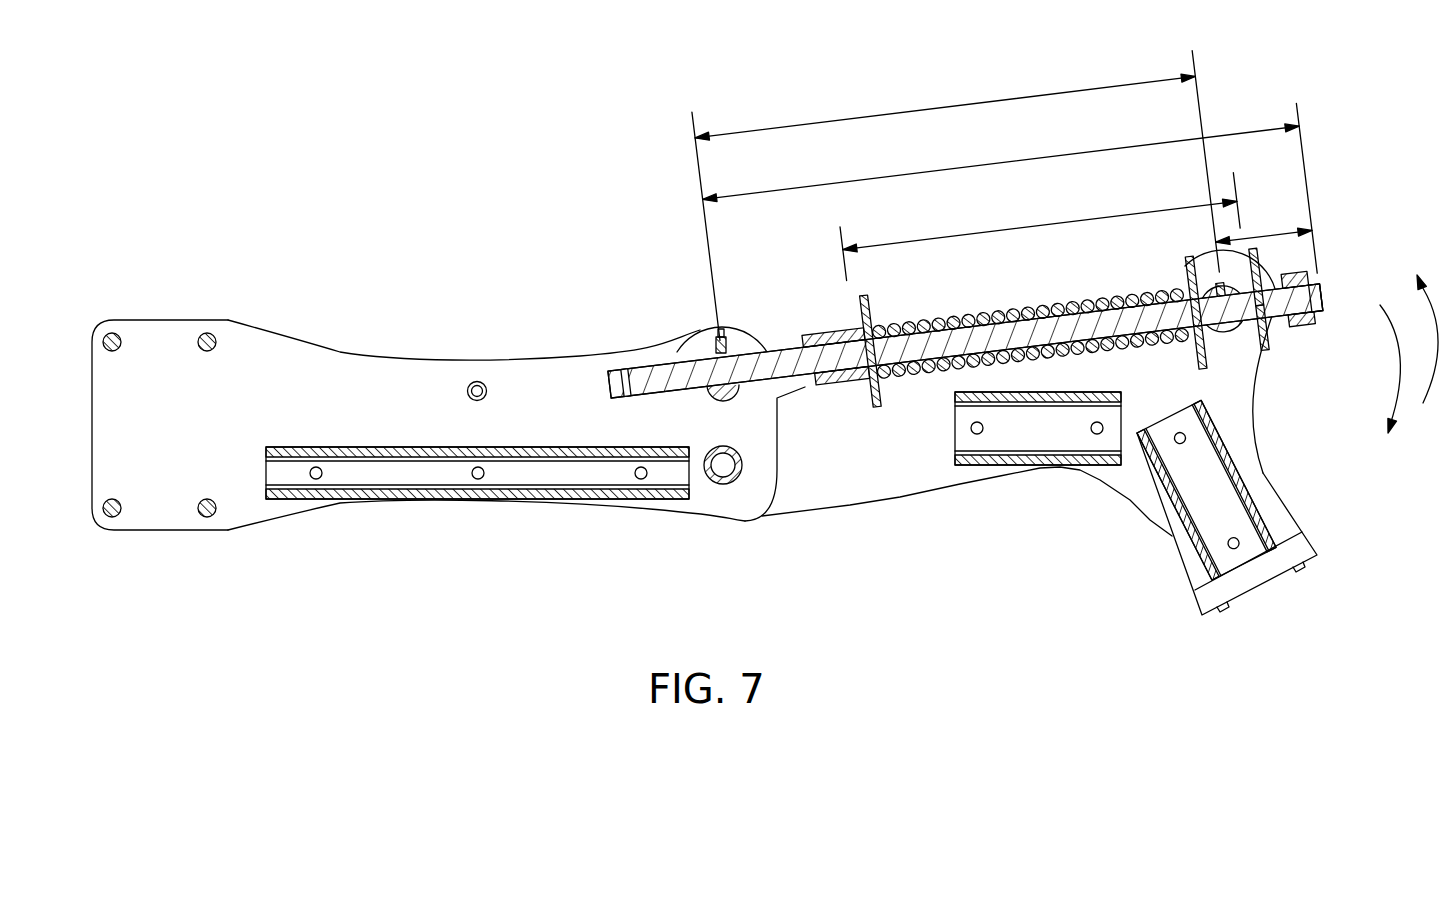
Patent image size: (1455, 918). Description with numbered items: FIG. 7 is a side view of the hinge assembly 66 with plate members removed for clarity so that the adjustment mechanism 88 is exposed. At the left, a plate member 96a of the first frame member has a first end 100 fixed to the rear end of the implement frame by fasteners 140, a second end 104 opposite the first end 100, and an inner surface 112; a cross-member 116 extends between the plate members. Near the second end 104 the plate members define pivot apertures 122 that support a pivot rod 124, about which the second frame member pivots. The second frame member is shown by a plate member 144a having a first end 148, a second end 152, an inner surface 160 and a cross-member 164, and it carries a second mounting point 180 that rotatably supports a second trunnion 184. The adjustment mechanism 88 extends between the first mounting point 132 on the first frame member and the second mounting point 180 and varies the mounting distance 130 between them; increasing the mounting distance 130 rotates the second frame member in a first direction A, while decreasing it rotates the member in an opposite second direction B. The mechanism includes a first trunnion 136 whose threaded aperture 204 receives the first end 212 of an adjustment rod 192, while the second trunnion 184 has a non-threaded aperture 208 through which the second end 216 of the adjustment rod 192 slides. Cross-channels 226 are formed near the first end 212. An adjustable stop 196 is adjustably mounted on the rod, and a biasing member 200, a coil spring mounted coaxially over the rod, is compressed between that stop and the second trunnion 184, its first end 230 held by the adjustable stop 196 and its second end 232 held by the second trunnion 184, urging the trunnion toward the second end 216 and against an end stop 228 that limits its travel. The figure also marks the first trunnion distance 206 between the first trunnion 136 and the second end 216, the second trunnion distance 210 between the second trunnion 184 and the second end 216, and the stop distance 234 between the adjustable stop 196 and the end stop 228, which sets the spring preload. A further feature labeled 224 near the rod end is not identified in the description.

The hinge assembly 66 is at (326, 135).
The first end 100 is at (152, 312).
The plate member 96a is at (247, 342).
The fasteners 140 is at (112, 514).
The inner surface 112 is at (307, 382).
The first mounting point 132 is at (705, 355).
The cross-member 116 is at (418, 482).
The second end 104 is at (703, 322).
The first trunnion 136 is at (733, 330).
The threaded aperture 204 is at (709, 392).
The pivot apertures 122 is at (717, 487).
The pivot rod 124 is at (727, 483).
The first end 148 is at (790, 518).
The plate member 144a is at (898, 473).
The inner surface 160 is at (922, 455).
The cross-member 164 is at (1050, 437).
The second end 152 is at (1282, 462).
The second mounting point 180 is at (1252, 370).
The second trunnion 184 is at (1222, 340).
The cross-channels 226 is at (611, 372).
The first end 212 is at (611, 390).
The adjustment mechanism 88 is at (781, 332).
The adjustment rod 192 is at (815, 337).
The adjustable stop 196 is at (857, 298).
The biasing member 200 is at (966, 316).
The first end 230 is at (893, 322).
The second end 232 is at (1185, 262).
The non-threaded aperture 208 is at (1245, 270).
The end stop 228 is at (1268, 362).
The second end 216 is at (1310, 285).
The rod tip 224 is at (1320, 322).
The mounting distance 130 is at (928, 109).
The first trunnion distance 206 is at (1022, 160).
The stop distance 234 is at (1047, 224).
The second trunnion distance 210 is at (1268, 235).
The second direction B is at (1422, 323).
The first direction A is at (1391, 386).